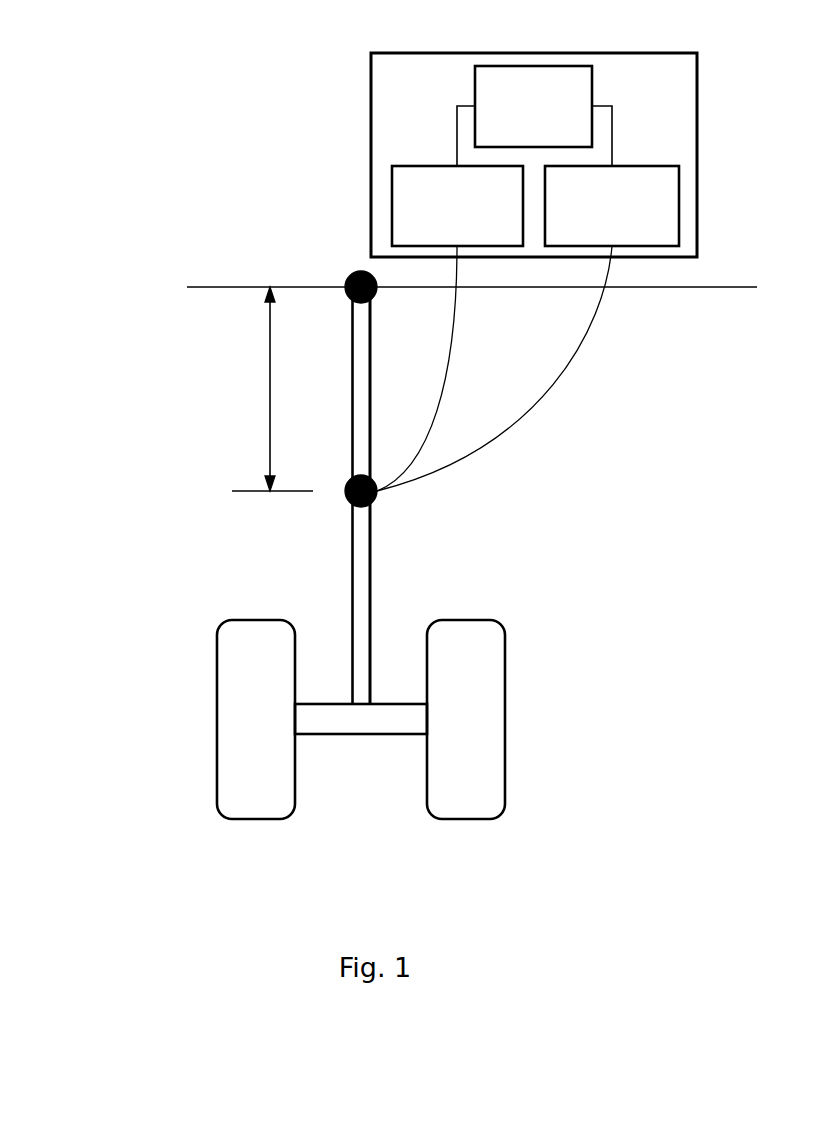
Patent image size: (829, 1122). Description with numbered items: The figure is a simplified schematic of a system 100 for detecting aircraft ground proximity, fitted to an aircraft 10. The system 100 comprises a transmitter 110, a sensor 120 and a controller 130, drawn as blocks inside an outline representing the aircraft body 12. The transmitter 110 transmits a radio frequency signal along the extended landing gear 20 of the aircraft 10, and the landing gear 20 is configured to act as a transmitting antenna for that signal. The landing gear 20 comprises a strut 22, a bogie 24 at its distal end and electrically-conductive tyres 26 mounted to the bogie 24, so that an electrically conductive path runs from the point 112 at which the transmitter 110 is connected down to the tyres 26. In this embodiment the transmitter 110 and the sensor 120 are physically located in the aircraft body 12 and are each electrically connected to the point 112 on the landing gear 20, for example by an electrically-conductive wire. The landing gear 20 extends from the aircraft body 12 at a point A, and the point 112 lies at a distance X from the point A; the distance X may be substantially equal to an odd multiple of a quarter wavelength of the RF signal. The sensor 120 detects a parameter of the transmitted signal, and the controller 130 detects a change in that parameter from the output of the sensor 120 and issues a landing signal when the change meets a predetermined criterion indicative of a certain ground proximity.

The aircraft 10 is at (167, 166).
The aircraft body 12 is at (200, 287).
The landing gear 20 is at (350, 600).
The strut 22 is at (371, 622).
The bogie 24 is at (360, 734).
The tyres 26 is at (232, 819).
The system 100 is at (463, 139).
The transmitter 110 is at (436, 221).
The point 112 is at (377, 491).
The sensor 120 is at (591, 221).
The controller 130 is at (512, 123).
The point A is at (353, 272).
The distance X is at (272, 389).